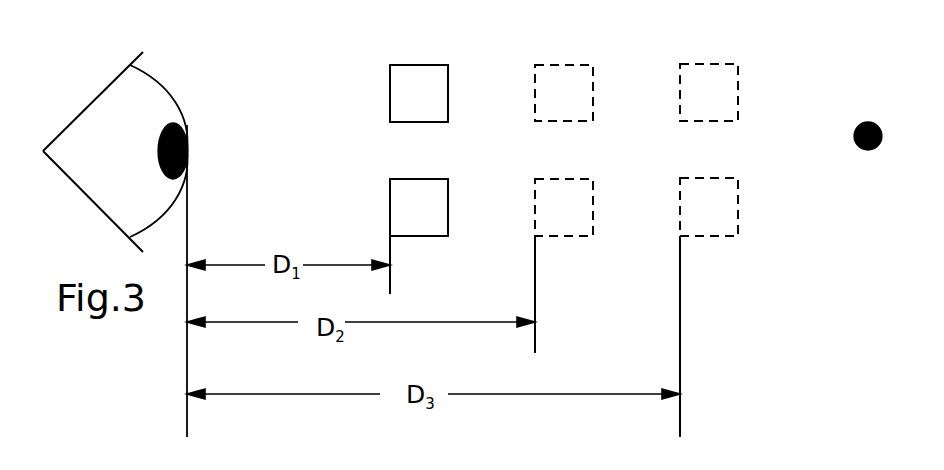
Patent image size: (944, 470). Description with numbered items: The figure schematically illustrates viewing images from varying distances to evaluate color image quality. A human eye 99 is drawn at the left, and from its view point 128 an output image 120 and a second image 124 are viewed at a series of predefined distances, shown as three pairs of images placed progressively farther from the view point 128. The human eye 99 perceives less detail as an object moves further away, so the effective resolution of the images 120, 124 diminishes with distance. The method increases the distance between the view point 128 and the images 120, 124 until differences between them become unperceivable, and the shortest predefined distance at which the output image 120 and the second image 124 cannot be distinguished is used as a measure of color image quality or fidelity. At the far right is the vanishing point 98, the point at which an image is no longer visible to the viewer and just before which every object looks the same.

The human eye 99 is at (187, 63).
The view point 128 is at (187, 142).
The output image 120 is at (557, 74).
The second image 124 is at (565, 222).
The vanishing point 98 is at (869, 102).